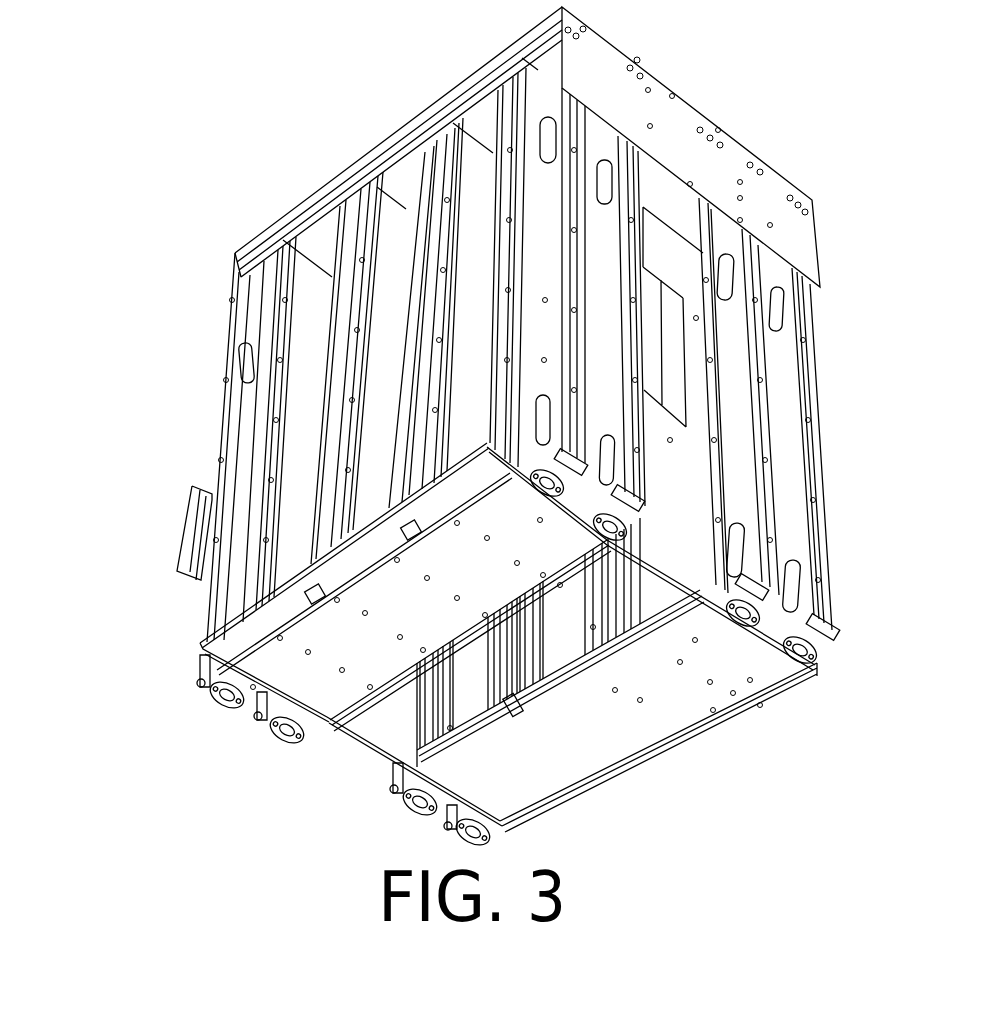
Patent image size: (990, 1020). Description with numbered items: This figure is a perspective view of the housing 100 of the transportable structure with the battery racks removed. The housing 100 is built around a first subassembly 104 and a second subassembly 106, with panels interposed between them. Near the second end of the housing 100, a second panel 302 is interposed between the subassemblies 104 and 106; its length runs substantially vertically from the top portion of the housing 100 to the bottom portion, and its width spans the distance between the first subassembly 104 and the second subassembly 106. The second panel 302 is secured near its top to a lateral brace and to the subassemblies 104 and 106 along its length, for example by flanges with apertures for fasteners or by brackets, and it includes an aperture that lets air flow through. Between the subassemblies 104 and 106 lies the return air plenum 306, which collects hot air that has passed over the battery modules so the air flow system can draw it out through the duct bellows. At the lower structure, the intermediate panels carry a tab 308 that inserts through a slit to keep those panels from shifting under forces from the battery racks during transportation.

The housing 100 is at (266, 84).
The first subassembly 104 is at (840, 396).
The second subassembly 106 is at (216, 390).
The second panel 302 is at (683, 497).
The return air plenum 306 is at (562, 635).
The tab 308 is at (313, 594).